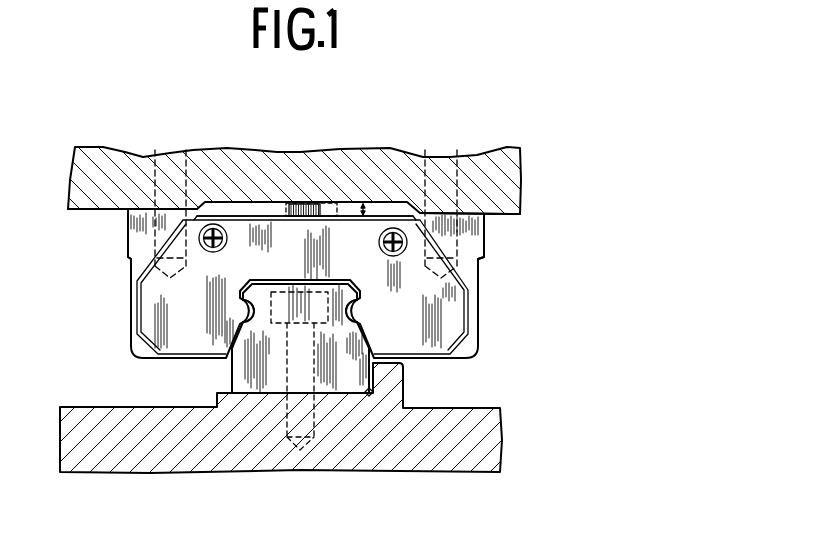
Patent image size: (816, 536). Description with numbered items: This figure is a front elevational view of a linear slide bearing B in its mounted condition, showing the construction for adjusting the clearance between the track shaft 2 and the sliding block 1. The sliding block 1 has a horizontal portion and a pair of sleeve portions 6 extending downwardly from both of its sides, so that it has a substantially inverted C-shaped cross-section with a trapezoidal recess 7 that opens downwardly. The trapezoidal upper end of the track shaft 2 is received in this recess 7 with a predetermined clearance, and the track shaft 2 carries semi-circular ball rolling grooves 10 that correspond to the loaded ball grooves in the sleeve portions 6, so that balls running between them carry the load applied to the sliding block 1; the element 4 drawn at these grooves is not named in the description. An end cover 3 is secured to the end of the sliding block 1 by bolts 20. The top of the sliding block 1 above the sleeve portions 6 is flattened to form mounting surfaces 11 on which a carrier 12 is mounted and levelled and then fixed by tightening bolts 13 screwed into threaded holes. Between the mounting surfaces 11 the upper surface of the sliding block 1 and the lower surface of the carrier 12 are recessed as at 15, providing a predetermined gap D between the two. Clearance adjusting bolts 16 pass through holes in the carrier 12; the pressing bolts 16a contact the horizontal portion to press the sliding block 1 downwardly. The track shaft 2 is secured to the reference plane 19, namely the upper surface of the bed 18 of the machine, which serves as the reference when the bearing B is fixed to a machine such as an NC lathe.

The sliding block 1 is at (124, 278).
The track shaft 2 is at (224, 373).
The end cover 3 is at (466, 276).
The ball rolling groove of rail 4 is at (244, 332).
The sleeve portion 6 is at (132, 318).
The recess 7 is at (267, 291).
The ball rolling groove 10 is at (247, 314).
The mounting surface 11 is at (140, 208).
The carrier 12 is at (105, 146).
The tightening bolt 13 is at (188, 183).
The recess 15 is at (262, 217).
The clearance adjusting bolt 16 is at (305, 161).
The pressing bolt 16a is at (337, 203).
The bed 18 is at (480, 402).
The reference plane 19 is at (272, 388).
The bolt 20 is at (222, 227).
The linear slide bearing B is at (122, 235).
The gap D is at (375, 203).